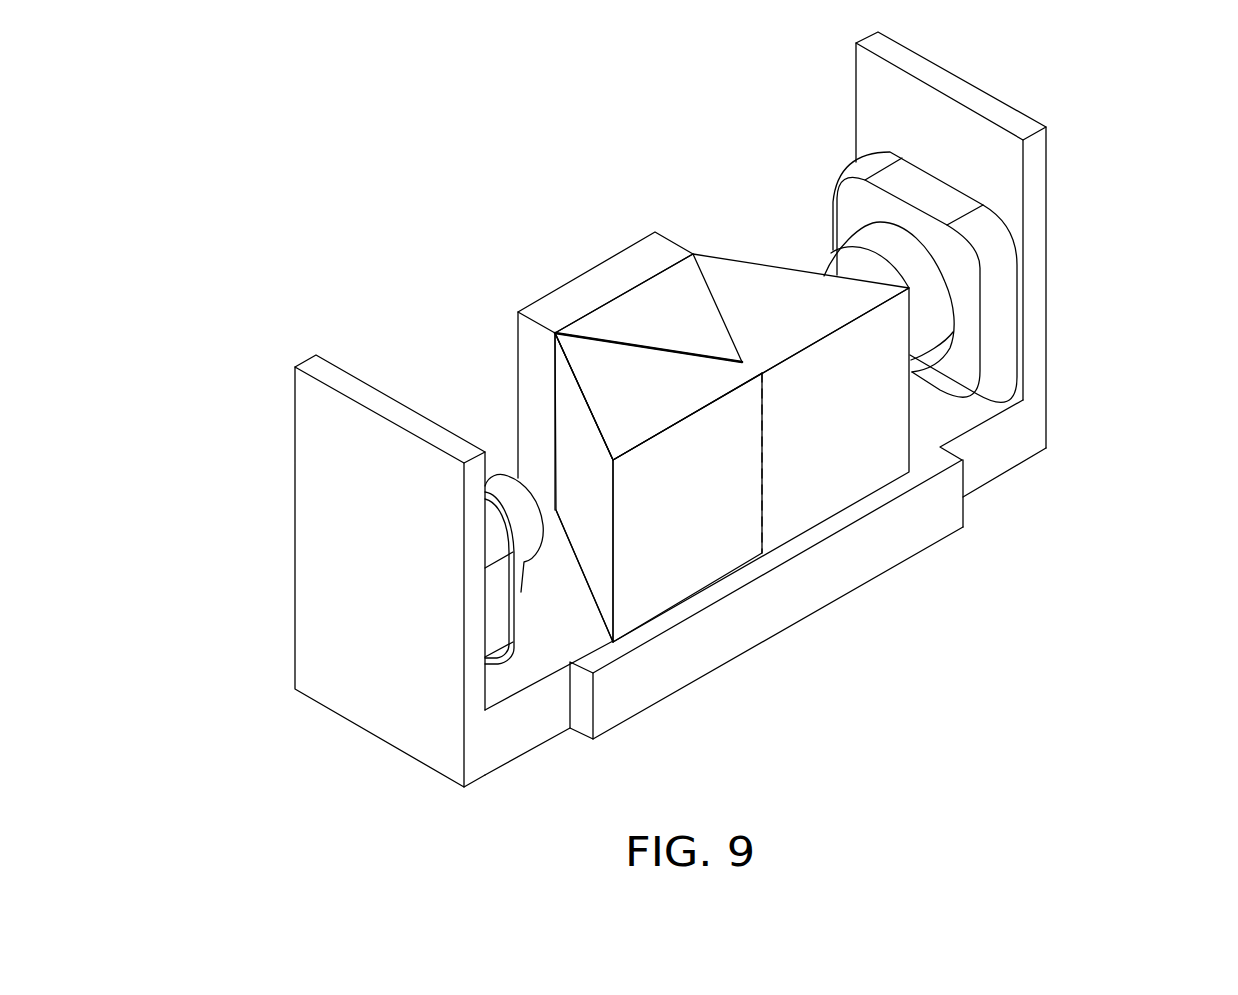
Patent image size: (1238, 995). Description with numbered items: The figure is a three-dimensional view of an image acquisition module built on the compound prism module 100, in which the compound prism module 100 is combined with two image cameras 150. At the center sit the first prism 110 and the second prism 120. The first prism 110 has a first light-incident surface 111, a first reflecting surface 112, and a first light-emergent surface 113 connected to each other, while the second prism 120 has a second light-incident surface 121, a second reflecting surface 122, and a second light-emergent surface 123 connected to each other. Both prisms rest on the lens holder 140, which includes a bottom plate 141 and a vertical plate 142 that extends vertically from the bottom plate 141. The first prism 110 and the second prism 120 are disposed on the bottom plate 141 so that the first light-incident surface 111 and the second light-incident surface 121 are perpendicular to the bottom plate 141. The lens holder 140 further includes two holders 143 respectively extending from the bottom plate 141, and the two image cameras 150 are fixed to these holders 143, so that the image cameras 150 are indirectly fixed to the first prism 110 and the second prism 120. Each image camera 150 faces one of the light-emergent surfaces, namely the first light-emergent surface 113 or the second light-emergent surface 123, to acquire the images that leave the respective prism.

The compound prism module 100 is at (652, 422).
The first prism 110 is at (623, 435).
The first light-incident surface 111 is at (853, 492).
The first reflecting surface 112 is at (713, 307).
The first light-emergent surface 113 is at (790, 264).
The second prism 120 is at (549, 503).
The second light-incident surface 121 is at (718, 534).
The second reflecting surface 122 is at (600, 340).
The second light-emergent surface 123 is at (578, 508).
The lens holder 140 is at (748, 472).
The bottom plate 141 is at (955, 418).
The vertical plate 142 is at (533, 355).
The holder 143 is at (348, 544).
The image camera 150 is at (498, 622).